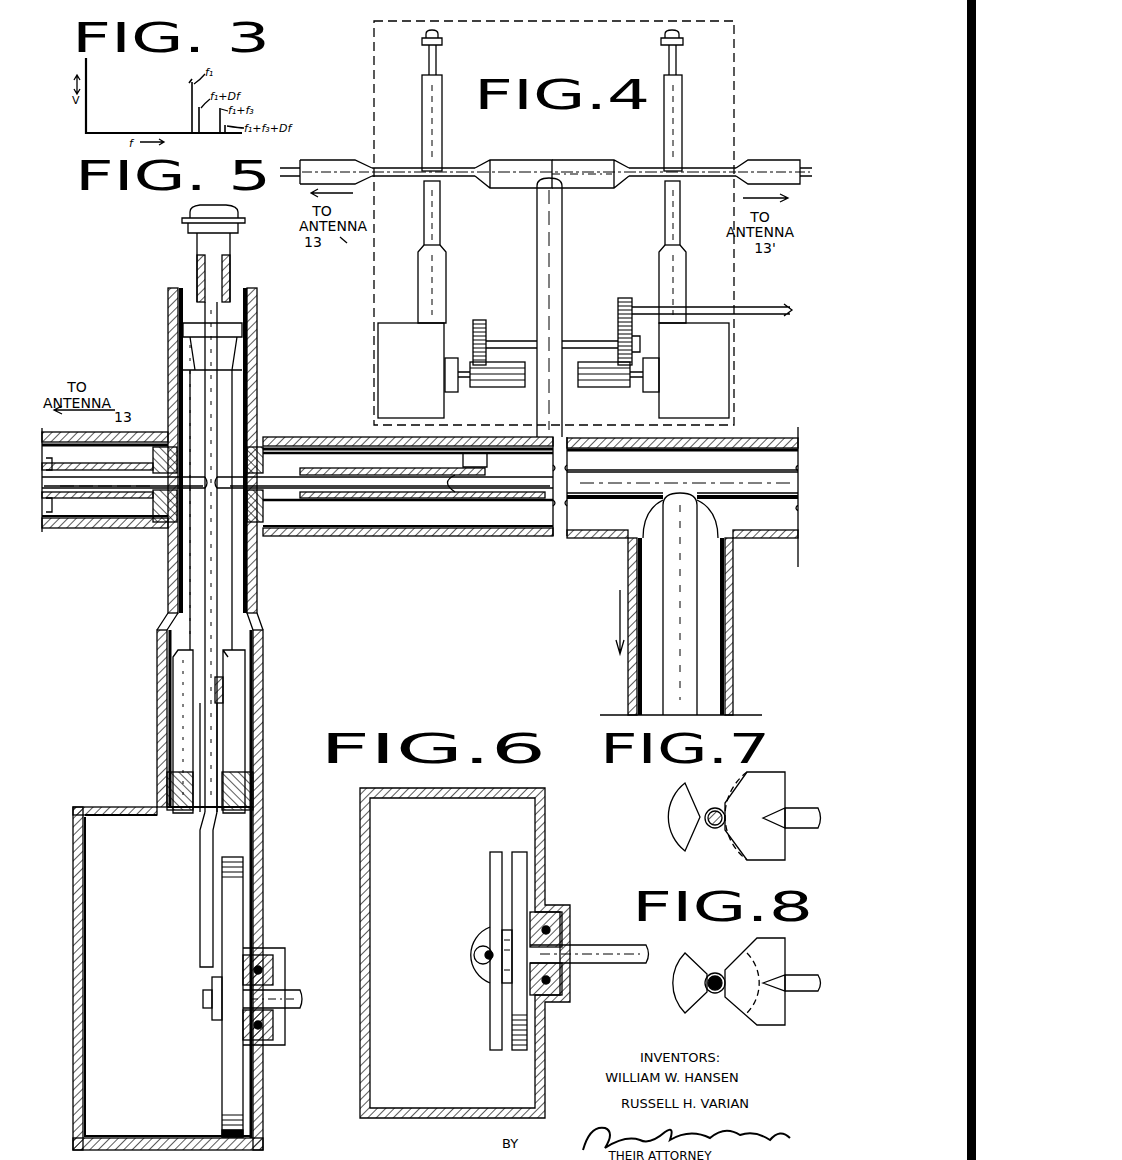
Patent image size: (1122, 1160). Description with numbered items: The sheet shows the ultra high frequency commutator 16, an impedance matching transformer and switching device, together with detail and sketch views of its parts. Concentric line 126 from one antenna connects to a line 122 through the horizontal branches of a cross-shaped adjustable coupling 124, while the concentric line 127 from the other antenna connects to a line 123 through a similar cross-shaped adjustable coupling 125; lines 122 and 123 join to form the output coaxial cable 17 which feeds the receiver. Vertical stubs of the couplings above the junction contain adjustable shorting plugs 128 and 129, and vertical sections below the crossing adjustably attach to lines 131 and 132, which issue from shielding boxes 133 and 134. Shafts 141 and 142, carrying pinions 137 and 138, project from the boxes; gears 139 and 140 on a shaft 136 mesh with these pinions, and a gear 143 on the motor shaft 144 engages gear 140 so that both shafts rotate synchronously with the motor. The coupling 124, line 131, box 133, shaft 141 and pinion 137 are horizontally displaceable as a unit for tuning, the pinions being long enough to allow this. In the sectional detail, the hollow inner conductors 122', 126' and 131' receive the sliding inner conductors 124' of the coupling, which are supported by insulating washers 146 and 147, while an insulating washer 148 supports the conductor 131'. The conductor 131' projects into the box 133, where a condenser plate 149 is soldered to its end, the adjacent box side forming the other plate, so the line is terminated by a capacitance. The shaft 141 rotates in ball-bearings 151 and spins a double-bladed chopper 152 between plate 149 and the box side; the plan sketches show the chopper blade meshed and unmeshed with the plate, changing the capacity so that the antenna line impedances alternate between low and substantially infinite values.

In FIG. 4, the ultra high frequency commutator 16 is at (741, 87).
In FIG. 4, the output line 17 is at (563, 246).
In FIG. 5, the output line 17 is at (628, 693).
In FIG. 4, the line 122 is at (513, 163).
In FIG. 5, the line 122 is at (408, 496).
In FIG. 5, the inner conductor of line 122 122' is at (427, 504).
In FIG. 4, the line 123 is at (591, 163).
In FIG. 5, the line 123 is at (618, 536).
In FIG. 4, the cross-shaped adjustable coupling 124 is at (417, 160).
In FIG. 5, the cross-shaped adjustable coupling 124 is at (241, 450).
In FIG. 5, the inner conductor of device 124 124' is at (265, 450).
In FIG. 4, the cross-shaped adjustable coupling 125 is at (667, 183).
In FIG. 4, the concentric line 126 is at (326, 160).
In FIG. 5, the concentric line 126 is at (105, 492).
In FIG. 5, the inner conductor of line 126 126' is at (97, 510).
In FIG. 4, the concentric line 127 is at (768, 160).
In FIG. 4, the adjustable shorting plug 128 is at (428, 64).
In FIG. 5, the adjustable shorting plug 128 is at (197, 269).
In FIG. 4, the adjustable shorting plug 129 is at (678, 58).
In FIG. 4, the line 131 is at (414, 284).
In FIG. 5, the line 131 is at (180, 731).
In FIG. 5, the inner conductor of line 131 131' is at (250, 744).
In FIG. 6, the inner conductor of line 131 131' is at (454, 955).
In FIG. 7, the inner conductor of line 131 131' is at (792, 832).
In FIG. 8, the inner conductor of line 131 131' is at (792, 996).
In FIG. 4, the line 132 is at (661, 273).
In FIG. 4, the shielding box 133 is at (378, 331).
In FIG. 5, the shielding box 133 is at (74, 848).
In FIG. 6, the shielding box 133 is at (361, 848).
In FIG. 4, the shielding box 134 is at (730, 408).
In FIG. 4, the shaft 136 is at (524, 341).
In FIG. 4, the pinion 137 is at (495, 390).
In FIG. 4, the pinion 138 is at (615, 390).
In FIG. 4, the gear 139 is at (480, 320).
In FIG. 4, the gear 140 is at (618, 341).
In FIG. 4, the shaft 141 is at (465, 365).
In FIG. 5, the shaft 141 is at (301, 999).
In FIG. 6, the shaft 141 is at (615, 965).
In FIG. 4, the shaft 142 is at (644, 393).
In FIG. 4, the gear 143 is at (618, 316).
In FIG. 4, the motor shaft 144 is at (760, 322).
In FIG. 5, the insulating washer 146 is at (162, 455).
In FIG. 5, the insulating washer 147 is at (280, 447).
In FIG. 5, the insulating washer 148 is at (170, 775).
In FIG. 5, the condenser plate 149 is at (199, 955).
In FIG. 6, the condenser plate 149 is at (490, 900).
In FIG. 7, the condenser plate 149 is at (778, 785).
In FIG. 8, the condenser plate 149 is at (780, 956).
In FIG. 5, the ball-bearings 151 is at (284, 968).
In FIG. 6, the ball-bearings 151 is at (550, 910).
In FIG. 5, the double-bladed chopper 152 is at (222, 1042).
In FIG. 6, the double-bladed chopper 152 is at (527, 1025).
In FIG. 7, the double-bladed chopper 152 is at (698, 848).
In FIG. 8, the double-bladed chopper 152 is at (689, 966).